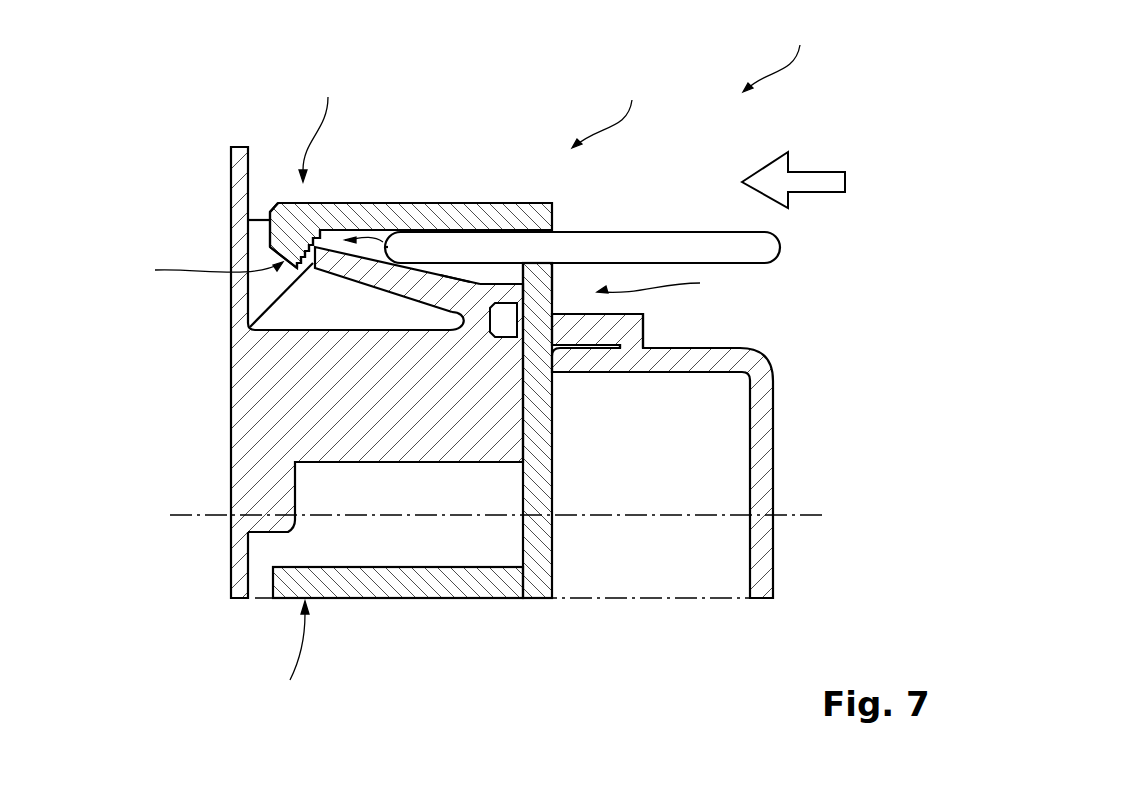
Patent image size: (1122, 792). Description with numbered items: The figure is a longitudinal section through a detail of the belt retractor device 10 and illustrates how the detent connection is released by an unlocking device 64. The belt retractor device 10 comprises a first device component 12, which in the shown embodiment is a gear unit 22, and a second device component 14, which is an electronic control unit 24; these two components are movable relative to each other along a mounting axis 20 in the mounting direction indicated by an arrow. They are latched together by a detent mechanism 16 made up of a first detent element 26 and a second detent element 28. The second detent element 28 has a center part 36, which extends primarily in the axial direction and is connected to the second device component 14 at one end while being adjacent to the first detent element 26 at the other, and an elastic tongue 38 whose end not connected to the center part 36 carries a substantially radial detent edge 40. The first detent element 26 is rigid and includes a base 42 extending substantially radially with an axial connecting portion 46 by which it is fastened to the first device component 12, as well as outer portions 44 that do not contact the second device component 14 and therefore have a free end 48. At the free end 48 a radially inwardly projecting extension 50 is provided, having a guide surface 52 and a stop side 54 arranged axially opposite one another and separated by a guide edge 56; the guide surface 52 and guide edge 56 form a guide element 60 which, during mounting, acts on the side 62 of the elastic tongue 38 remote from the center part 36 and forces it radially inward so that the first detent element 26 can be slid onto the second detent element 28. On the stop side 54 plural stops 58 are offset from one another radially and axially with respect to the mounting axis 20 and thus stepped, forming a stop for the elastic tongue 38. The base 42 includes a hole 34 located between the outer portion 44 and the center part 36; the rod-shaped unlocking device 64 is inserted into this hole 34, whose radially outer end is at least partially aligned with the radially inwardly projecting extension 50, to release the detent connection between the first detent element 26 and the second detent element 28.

The belt retractor device 10 is at (793, 110).
The first device component 12 is at (731, 445).
The gear unit 22 is at (731, 445).
The second device component 14 is at (171, 369).
The electronic control unit 24 is at (240, 183).
The detent mechanism 16 is at (611, 107).
The mounting axis 20 is at (180, 517).
The first detent element 26 is at (665, 281).
The second detent element 28 is at (298, 365).
The hole 34 is at (563, 267).
The center part 36 is at (298, 365).
The elastic tongue 38 is at (400, 272).
The detent edge 40 is at (291, 317).
The base 42 is at (693, 385).
The outer portions 44 is at (335, 389).
The connecting portion 46 is at (603, 328).
The free end 48 is at (305, 388).
The radially inwardly projecting extension 50 is at (288, 240).
The guide surface 52 is at (273, 266).
The stop side 54 is at (386, 235).
The guide edge 56 is at (300, 268).
The stops 58 is at (310, 240).
The guide element 60 is at (201, 272).
The side of the elastic tongue 62 is at (458, 273).
The unlocking device 64 is at (675, 240).